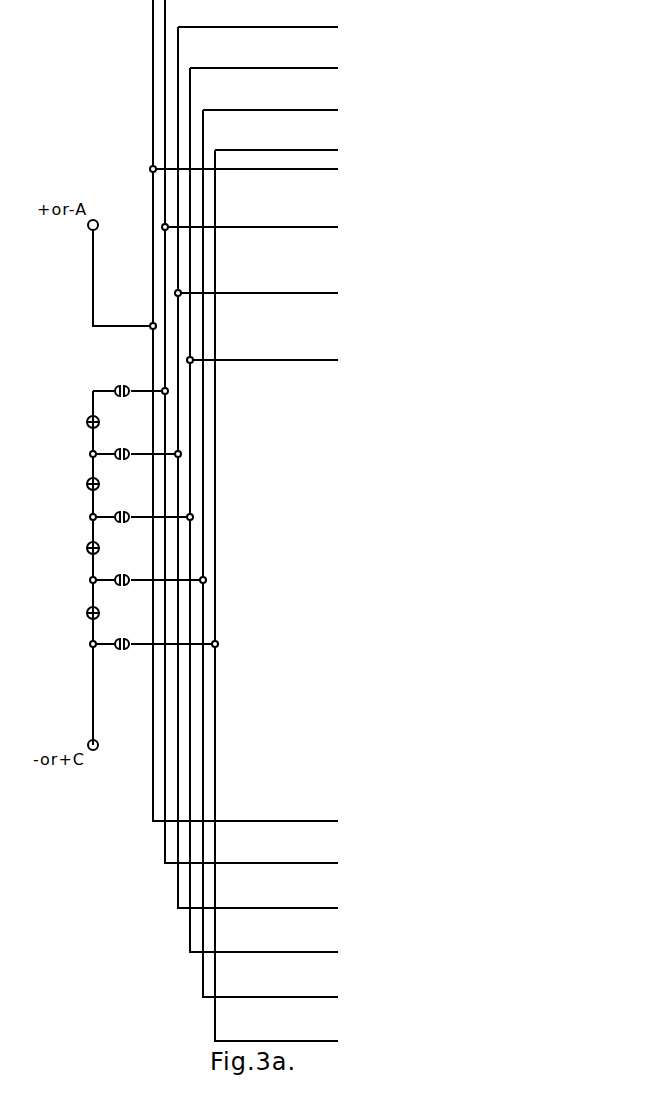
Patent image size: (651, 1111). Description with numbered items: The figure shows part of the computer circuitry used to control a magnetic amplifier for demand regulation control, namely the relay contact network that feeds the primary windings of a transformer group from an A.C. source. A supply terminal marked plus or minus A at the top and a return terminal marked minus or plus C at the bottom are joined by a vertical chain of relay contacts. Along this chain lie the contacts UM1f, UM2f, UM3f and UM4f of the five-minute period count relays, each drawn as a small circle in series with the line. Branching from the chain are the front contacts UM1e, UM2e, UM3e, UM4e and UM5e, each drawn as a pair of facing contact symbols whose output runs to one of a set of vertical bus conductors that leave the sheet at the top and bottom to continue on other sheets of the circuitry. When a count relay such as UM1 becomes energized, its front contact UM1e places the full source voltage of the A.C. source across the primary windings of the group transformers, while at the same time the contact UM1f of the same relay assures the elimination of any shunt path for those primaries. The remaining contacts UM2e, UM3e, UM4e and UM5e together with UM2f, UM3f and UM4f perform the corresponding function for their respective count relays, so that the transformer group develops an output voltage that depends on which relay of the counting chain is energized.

The front contact of count relay UM5 UM5e is at (118, 386).
The front contact of count relay UM4 UM4e is at (134, 444).
The front contact of count relay UM3 UM3e is at (134, 507).
The front contact of count relay UM2 UM2e is at (134, 570).
The front contact of count relay UM1 UM1e is at (134, 634).
The contact of count relay UM4 UM4f is at (87, 422).
The contact of count relay UM3 UM3f is at (87, 484).
The contact of count relay UM2 UM2f is at (87, 548).
The contact of count relay UM1 UM1f is at (87, 613).